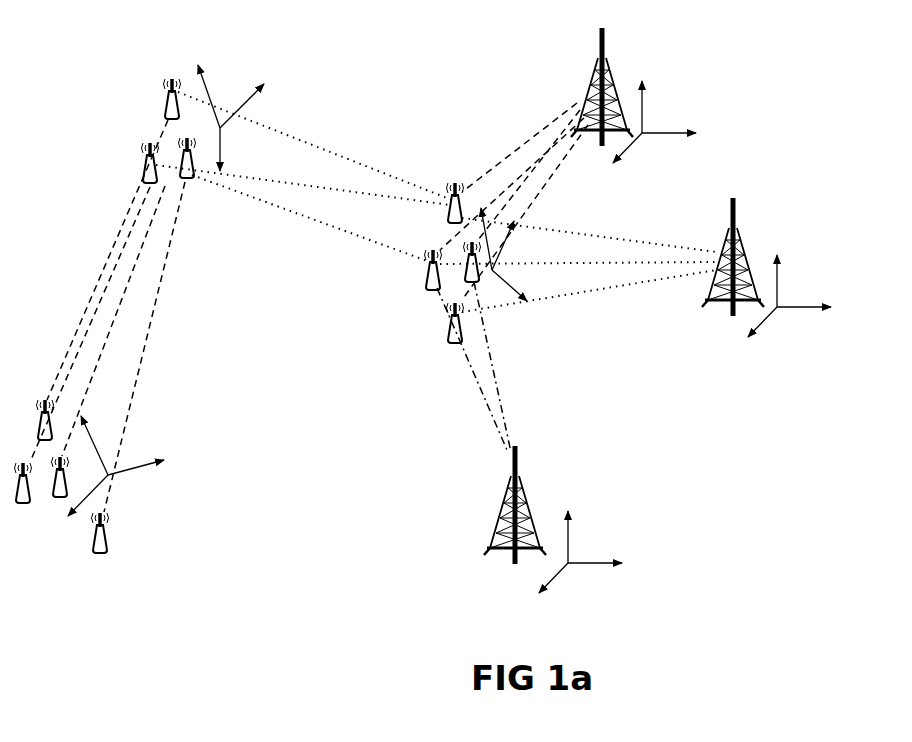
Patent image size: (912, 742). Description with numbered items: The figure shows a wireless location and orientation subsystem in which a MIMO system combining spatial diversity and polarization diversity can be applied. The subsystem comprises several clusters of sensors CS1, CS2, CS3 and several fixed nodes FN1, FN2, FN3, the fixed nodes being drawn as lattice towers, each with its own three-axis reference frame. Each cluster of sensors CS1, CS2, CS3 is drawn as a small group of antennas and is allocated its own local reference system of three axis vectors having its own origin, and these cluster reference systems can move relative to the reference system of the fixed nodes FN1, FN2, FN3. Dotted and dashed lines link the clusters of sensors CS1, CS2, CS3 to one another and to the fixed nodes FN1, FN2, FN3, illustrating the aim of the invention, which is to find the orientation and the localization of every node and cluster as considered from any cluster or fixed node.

The cluster of sensors CS1 is at (422, 296).
The cluster of sensors CS2 is at (150, 116).
The cluster of sensors CS3 is at (145, 487).
The fixed node FN1 is at (592, 79).
The fixed node FN2 is at (722, 240).
The fixed node FN3 is at (526, 502).